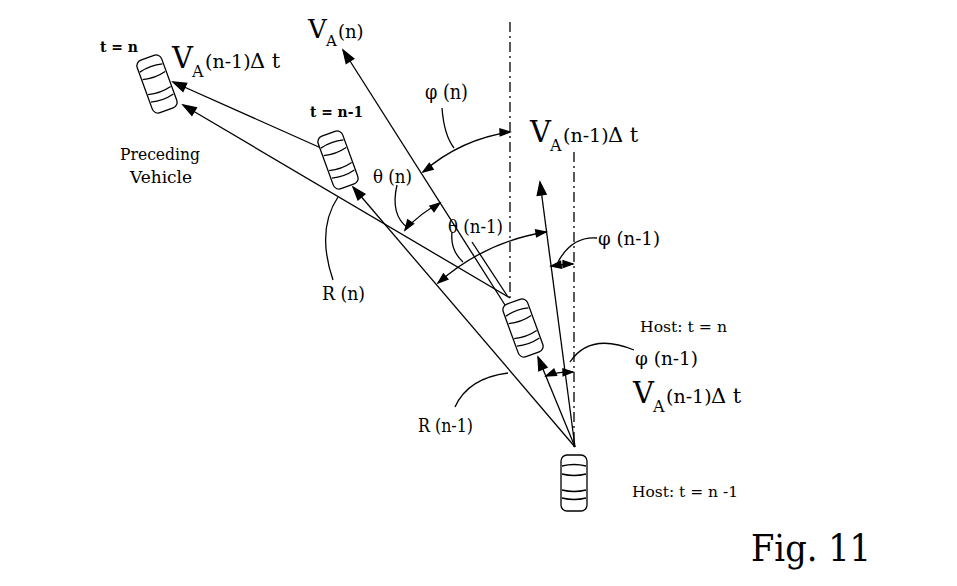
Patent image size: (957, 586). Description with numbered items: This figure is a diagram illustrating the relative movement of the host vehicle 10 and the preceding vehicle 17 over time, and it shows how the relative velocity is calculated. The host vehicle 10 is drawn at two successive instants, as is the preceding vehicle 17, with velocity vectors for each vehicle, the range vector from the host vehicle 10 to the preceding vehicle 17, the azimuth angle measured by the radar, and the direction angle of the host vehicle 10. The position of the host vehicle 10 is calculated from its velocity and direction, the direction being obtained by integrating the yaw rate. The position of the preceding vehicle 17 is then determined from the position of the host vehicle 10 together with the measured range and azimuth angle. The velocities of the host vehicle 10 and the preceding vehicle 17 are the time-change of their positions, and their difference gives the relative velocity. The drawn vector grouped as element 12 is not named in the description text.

The host vehicle 10 is at (506, 333).
The preceding vehicle 17 is at (146, 95).
The host vehicle velocity vector V_A(n) 12 is at (424, 177).